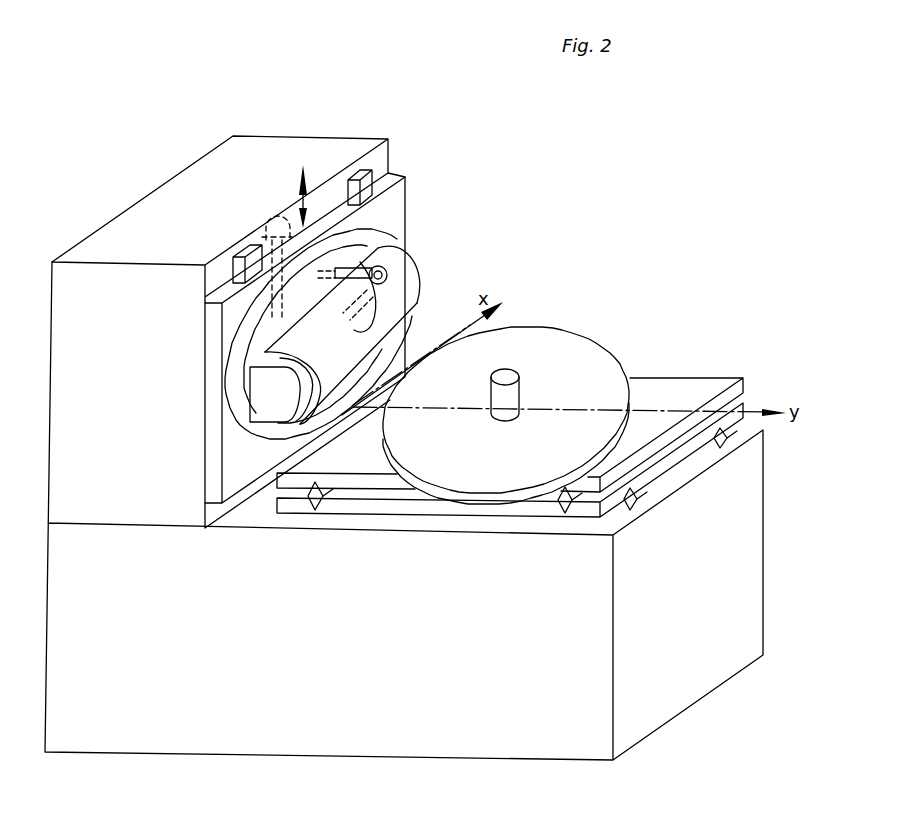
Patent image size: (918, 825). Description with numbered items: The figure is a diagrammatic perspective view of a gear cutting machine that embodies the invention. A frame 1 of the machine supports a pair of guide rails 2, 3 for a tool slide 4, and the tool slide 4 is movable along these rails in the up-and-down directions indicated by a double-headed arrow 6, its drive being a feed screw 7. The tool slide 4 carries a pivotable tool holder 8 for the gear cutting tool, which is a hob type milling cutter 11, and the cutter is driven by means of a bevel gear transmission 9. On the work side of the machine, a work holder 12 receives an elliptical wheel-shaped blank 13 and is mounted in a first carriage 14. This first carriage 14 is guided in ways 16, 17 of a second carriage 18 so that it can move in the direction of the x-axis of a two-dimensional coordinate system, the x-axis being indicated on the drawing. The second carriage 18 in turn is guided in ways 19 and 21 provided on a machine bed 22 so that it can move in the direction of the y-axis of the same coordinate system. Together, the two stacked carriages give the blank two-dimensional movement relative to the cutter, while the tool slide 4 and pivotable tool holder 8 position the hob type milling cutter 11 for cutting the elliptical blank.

The frame 1 is at (177, 187).
The guide rail 2 is at (240, 256).
The guide rail 3 is at (352, 180).
The tool slide 4 is at (395, 205).
The double-headed arrow 6 is at (305, 203).
The feed screw 7 is at (292, 225).
The pivotable tool holder 8 is at (353, 233).
The bevel gear transmission 9 is at (408, 270).
The hob type milling cutter 11 is at (372, 324).
The work holder 12 is at (514, 392).
The elliptical wheel-shaped blank 13 is at (610, 360).
The first carriage 14 is at (694, 387).
The way 16 is at (566, 506).
The way 17 is at (300, 510).
The second carriage 18 is at (410, 508).
The way 19 is at (632, 500).
The way 21 is at (721, 445).
The machine bed 22 is at (456, 646).